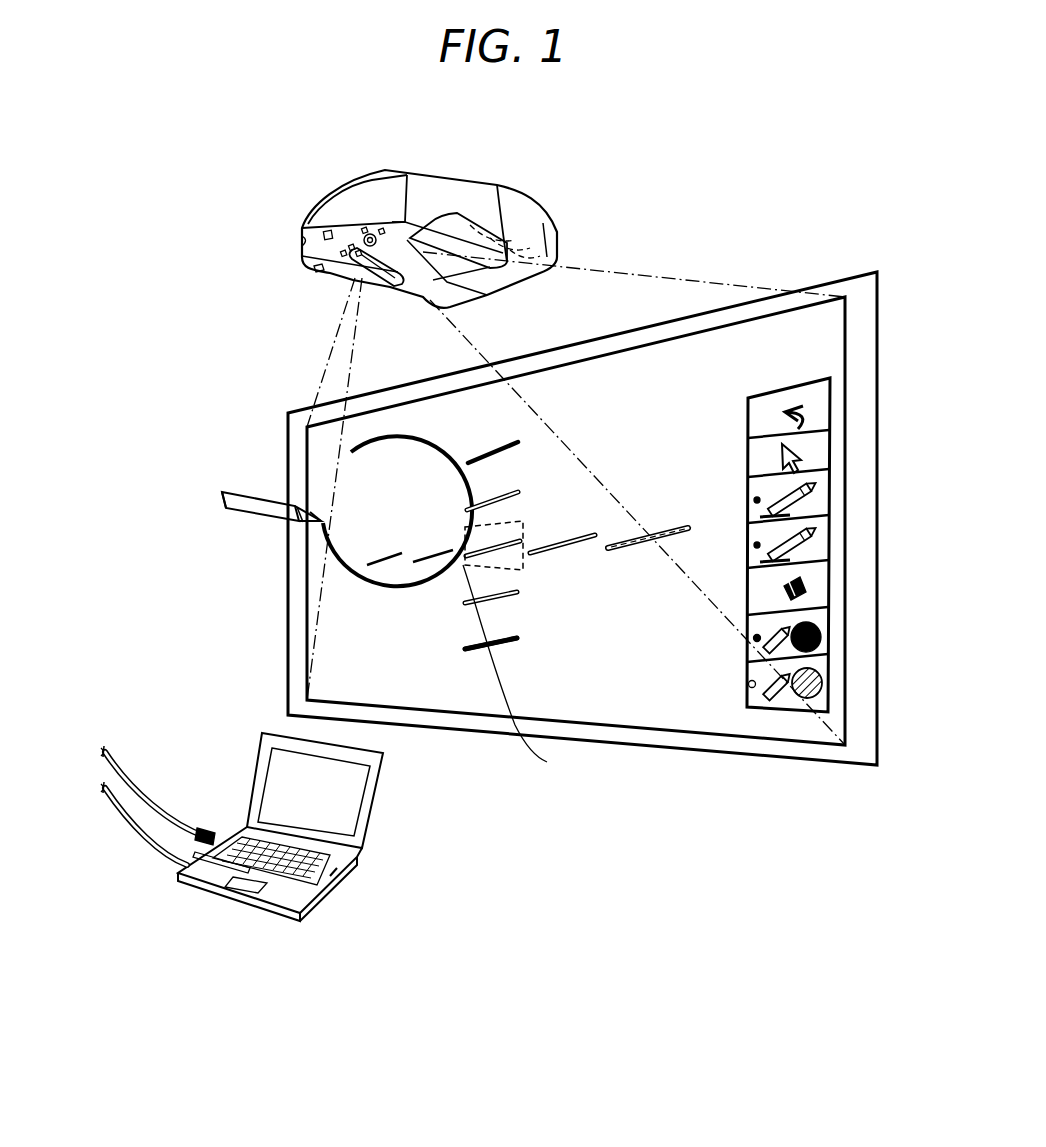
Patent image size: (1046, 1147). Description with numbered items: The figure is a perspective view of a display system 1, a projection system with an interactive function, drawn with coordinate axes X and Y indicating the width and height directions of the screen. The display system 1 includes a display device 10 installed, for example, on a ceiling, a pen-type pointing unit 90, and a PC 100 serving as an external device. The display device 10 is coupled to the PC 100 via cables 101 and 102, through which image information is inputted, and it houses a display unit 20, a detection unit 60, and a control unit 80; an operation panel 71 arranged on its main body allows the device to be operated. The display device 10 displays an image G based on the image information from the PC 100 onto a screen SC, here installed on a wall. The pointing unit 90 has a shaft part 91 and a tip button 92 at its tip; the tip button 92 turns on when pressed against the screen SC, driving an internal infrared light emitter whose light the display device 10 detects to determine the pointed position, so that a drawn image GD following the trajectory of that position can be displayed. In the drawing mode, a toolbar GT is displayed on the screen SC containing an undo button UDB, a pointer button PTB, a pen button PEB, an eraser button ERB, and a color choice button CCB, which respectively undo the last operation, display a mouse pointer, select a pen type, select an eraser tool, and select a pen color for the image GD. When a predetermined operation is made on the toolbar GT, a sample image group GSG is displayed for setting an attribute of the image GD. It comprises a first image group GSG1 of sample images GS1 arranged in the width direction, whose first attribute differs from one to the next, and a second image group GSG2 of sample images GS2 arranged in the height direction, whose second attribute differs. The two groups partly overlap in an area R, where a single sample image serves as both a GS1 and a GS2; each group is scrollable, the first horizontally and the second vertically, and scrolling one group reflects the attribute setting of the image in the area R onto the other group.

The display system 1 is at (120, 175).
The display device 10 is at (470, 183).
The display unit 20 is at (480, 223).
The detection unit 60 is at (503, 233).
The operation panel 71 is at (393, 221).
The control unit 80 is at (523, 247).
The pointing unit 90 is at (238, 486).
The shaft part 91 is at (227, 510).
The tip button 92 is at (318, 518).
The PC 100 is at (324, 898).
The cable 101 is at (140, 782).
The cable 102 is at (135, 822).
The screen SC is at (294, 410).
The toolbar GT is at (791, 384).
The undo button UDB is at (832, 403).
The pointer button PTB is at (832, 447).
The pen button PEB is at (832, 537).
The eraser button ERB is at (832, 590).
The color choice button CCB is at (832, 675).
The sample image group GSG is at (655, 392).
The first image group GSG1 is at (631, 526).
The second image group GSG2 is at (518, 436).
The sample image GS1 is at (390, 557).
The sample image GS2 is at (465, 650).
The image GD is at (522, 672).
The area R is at (523, 570).
The image G is at (669, 738).
The X axis X is at (55, 653).
The Y axis Y is at (55, 653).